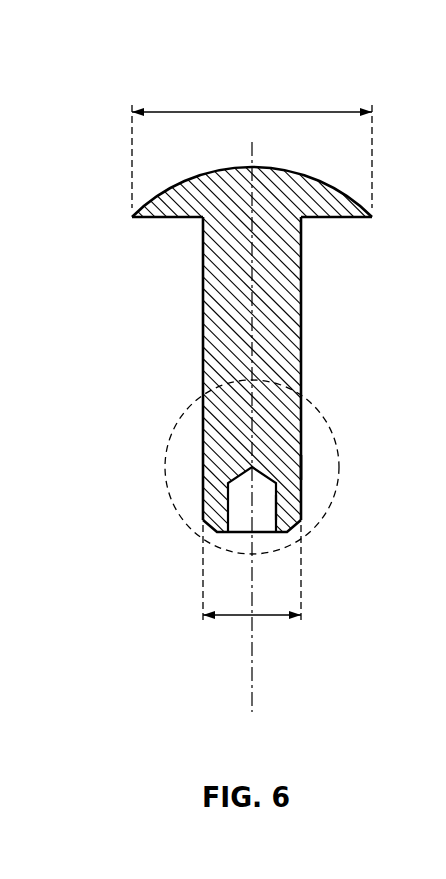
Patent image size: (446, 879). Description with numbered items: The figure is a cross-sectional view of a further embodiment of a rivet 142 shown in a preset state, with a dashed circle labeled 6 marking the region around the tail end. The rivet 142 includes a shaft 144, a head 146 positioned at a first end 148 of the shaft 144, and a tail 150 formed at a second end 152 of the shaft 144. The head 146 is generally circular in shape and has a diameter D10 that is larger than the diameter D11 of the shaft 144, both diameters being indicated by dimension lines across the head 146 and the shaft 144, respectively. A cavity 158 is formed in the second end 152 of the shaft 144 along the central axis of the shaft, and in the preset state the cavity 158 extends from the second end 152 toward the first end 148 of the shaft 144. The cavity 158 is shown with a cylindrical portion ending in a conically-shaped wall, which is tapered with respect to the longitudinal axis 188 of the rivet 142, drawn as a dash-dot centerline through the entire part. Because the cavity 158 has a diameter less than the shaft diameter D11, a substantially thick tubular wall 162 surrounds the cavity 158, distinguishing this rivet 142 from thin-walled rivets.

The rivet 142 is at (223, 343).
The shaft 144 is at (290, 325).
The head 146 is at (281, 168).
The first end of the shaft 148 is at (302, 235).
The tail 150 is at (203, 521).
The second end of the shaft 152 is at (302, 465).
The cavity 158 is at (247, 512).
The tubular wall 162 is at (292, 505).
The longitudinal axis 188 is at (253, 680).
The detail region 6 is at (340, 415).
The head diameter D10 is at (253, 111).
The shaft diameter D11 is at (263, 617).